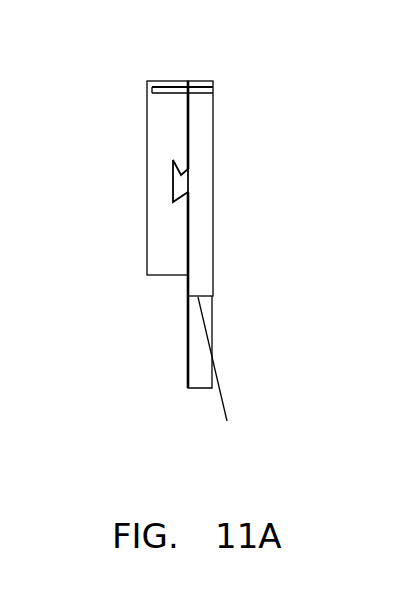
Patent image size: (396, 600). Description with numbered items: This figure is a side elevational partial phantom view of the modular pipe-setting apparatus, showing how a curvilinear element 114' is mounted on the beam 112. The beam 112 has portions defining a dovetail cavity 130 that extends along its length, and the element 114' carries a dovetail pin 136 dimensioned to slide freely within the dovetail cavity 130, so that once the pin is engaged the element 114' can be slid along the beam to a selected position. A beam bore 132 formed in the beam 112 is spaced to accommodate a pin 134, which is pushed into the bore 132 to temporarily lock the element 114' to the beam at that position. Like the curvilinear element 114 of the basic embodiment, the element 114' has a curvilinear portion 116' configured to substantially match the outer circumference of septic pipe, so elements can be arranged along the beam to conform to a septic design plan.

The beam 112 is at (145, 250).
The curvilinear element 114 is at (260, 188).
The curvilinear element 114' is at (260, 324).
The thin strip 116' is at (195, 369).
The dovetail cavity 130 is at (173, 163).
The beam bore 132 is at (170, 100).
The pin 134 is at (213, 87).
The dovetail pin 136 is at (183, 176).